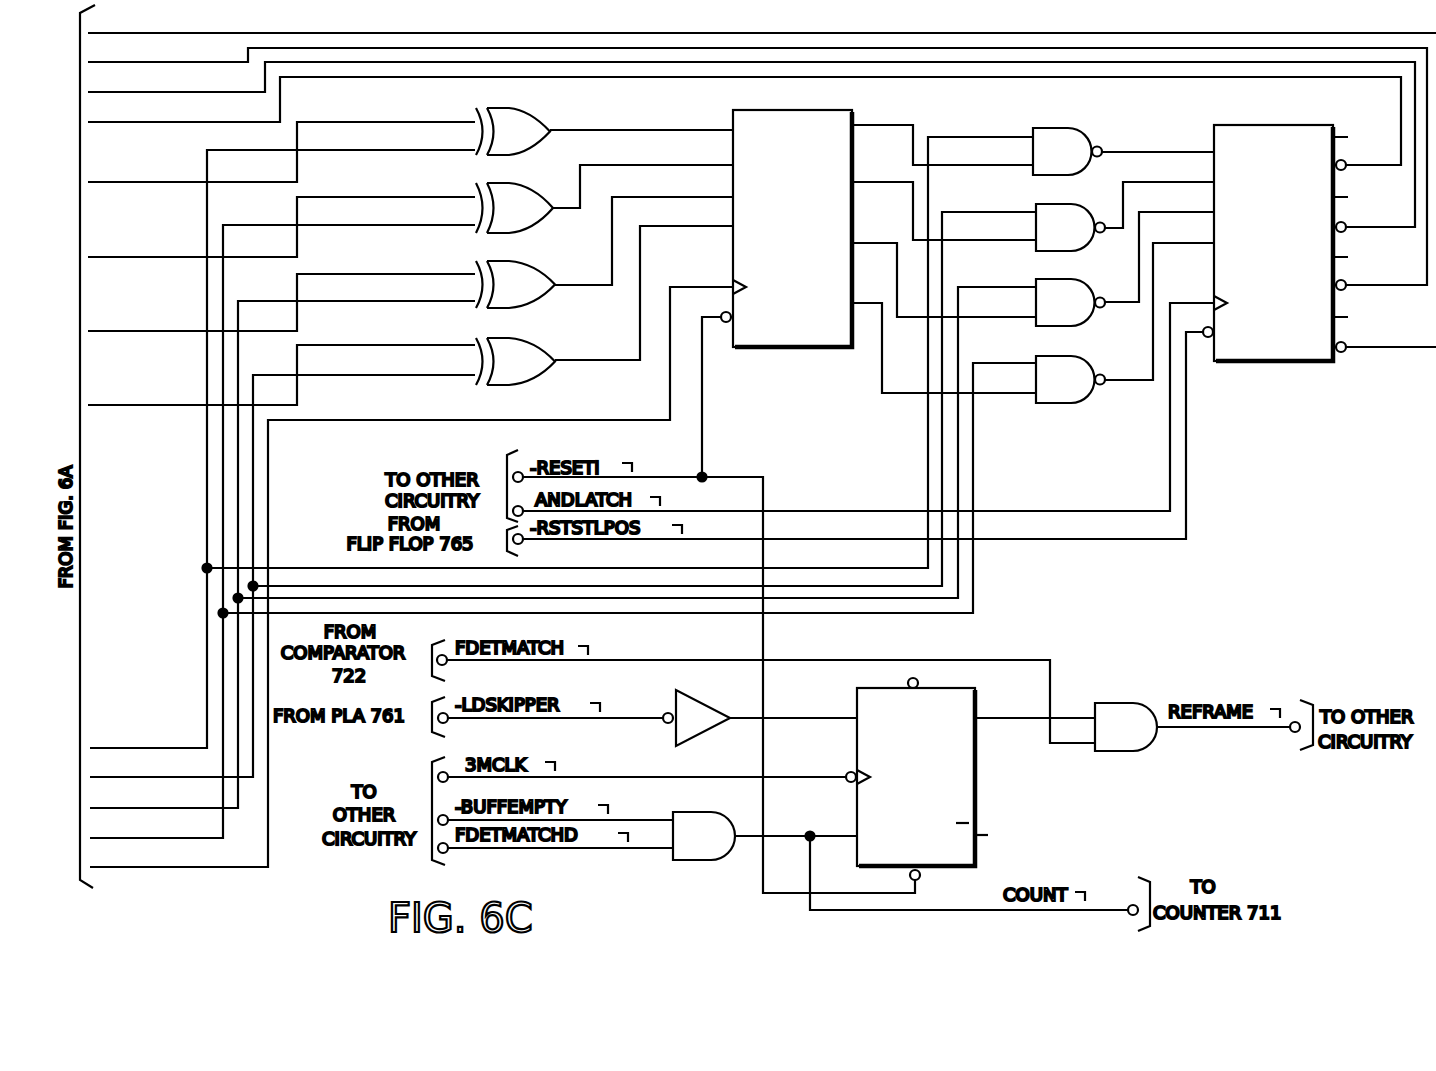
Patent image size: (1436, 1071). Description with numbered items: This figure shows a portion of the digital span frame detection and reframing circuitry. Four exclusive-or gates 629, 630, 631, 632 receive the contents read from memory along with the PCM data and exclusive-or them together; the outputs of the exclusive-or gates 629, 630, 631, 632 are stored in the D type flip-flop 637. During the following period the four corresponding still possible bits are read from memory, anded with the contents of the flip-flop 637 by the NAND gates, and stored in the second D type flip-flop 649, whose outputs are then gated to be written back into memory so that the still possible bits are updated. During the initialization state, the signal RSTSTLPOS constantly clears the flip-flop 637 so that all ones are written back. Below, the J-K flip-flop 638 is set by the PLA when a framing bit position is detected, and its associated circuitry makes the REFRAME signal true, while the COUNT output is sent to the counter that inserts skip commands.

The exclusive-or gate 629 is at (534, 348).
The exclusive-or gate 630 is at (526, 259).
The exclusive-or gate 631 is at (522, 185).
The exclusive-or gate 632 is at (529, 113).
The flip-flop 637 is at (818, 351).
The flip-flop 638 is at (982, 865).
The flip-flop 649 is at (1303, 365).